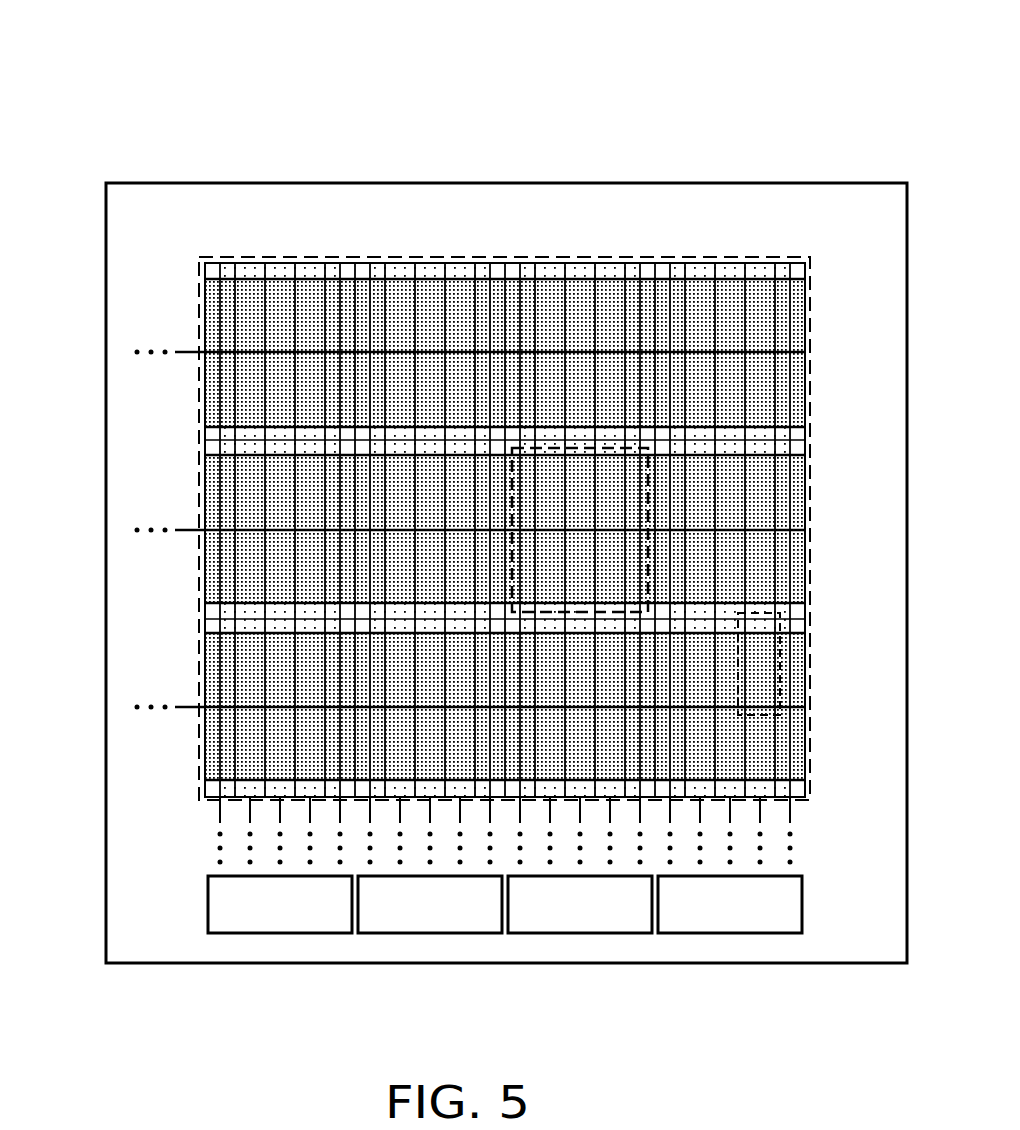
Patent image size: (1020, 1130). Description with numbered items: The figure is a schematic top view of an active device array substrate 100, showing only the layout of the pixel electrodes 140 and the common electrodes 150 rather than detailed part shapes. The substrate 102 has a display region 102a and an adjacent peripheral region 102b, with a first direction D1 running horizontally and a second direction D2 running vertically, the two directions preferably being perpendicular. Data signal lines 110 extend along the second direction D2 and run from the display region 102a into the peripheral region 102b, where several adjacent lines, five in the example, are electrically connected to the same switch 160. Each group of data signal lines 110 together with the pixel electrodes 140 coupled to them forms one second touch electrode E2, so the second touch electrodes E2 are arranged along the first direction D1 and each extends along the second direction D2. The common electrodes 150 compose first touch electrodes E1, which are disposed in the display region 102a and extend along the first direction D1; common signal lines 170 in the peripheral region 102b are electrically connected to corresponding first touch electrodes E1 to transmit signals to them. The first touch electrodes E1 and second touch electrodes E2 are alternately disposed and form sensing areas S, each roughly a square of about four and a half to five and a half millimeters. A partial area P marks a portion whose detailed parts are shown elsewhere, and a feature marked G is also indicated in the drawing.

The active device array substrate 100 is at (471, 591).
The substrate 102 is at (470, 182).
The display region 102a is at (408, 256).
The peripheral region 102b is at (712, 214).
The data signal lines 110 is at (220, 820).
The pixel electrode 140 is at (757, 272).
The common electrodes 150 is at (797, 292).
The switch 160 is at (802, 901).
The common signal lines 170 is at (188, 352).
The sensing area S is at (615, 445).
The gate line G is at (826, 631).
The partial area P is at (812, 668).
The first touch electrodes E1 is at (828, 280).
The second touch electrodes E2 is at (338, 250).
The first direction D1 is at (62, 10).
The second direction D2 is at (62, 10).